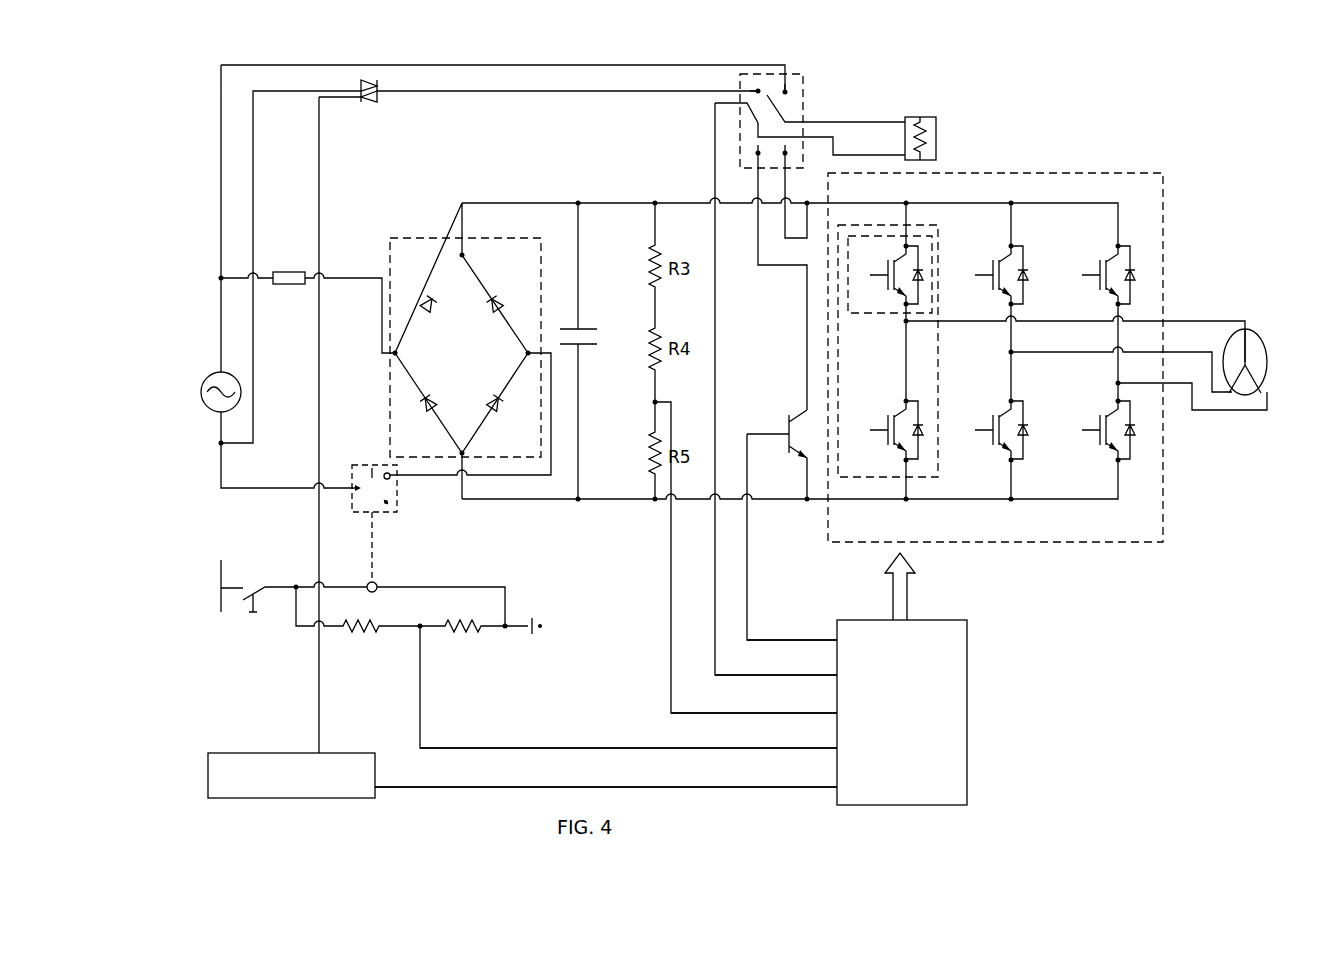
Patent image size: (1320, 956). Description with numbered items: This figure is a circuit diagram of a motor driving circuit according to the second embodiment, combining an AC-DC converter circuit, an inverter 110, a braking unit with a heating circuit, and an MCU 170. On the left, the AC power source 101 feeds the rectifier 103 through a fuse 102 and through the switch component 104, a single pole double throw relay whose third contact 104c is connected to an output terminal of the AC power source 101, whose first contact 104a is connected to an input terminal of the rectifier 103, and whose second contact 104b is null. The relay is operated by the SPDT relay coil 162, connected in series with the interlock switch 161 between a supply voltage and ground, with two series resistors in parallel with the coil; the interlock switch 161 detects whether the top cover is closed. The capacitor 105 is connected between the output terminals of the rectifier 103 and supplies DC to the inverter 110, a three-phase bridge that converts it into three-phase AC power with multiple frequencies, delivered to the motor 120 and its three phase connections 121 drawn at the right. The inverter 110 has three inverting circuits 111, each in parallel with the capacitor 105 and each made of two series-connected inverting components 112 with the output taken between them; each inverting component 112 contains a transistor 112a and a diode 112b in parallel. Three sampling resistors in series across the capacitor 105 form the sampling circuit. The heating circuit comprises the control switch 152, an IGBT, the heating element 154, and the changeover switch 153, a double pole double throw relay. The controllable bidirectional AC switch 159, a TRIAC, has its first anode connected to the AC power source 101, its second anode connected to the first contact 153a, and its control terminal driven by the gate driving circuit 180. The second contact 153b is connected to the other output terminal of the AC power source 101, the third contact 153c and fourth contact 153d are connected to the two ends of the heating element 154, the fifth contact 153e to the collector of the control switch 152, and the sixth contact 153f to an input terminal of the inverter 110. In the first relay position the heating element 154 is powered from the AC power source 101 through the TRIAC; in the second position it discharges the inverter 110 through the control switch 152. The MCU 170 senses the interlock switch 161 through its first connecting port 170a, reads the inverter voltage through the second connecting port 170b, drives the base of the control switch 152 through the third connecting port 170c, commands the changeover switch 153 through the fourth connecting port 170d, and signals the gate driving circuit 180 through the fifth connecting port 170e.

The AC power source 101 is at (207, 376).
The fuse 102 is at (292, 285).
The rectifier 103 is at (440, 236).
The switch component 104 is at (395, 467).
The first contact 104a is at (380, 474).
The second contact 104b is at (397, 507).
The third contact 104c is at (350, 487).
The capacitor 105 is at (573, 328).
The inverter 110 is at (1033, 357).
The inverting circuit 111 is at (928, 278).
The inverting component 112 is at (915, 327).
The transistor 112a is at (888, 286).
The diode 112b is at (921, 267).
The motor 120 is at (1249, 371).
The motor windings 121 is at (1230, 395).
The control switch 152 is at (789, 422).
The changeover switch 153 is at (771, 118).
The first contact 153a is at (758, 91).
The second contact 153b is at (785, 92).
The third contact 153c is at (758, 122).
The fourth contact 153d is at (785, 122).
The fifth contact 153e is at (758, 153).
The sixth contact 153f is at (785, 153).
The heating element 154 is at (916, 118).
The controllable bidirectional AC switch 159 is at (378, 97).
The interlock switch 161 is at (256, 606).
The SPDT relay coil 162 is at (378, 584).
The MCU 170 is at (728, 679).
The first connecting port 170a is at (628, 742).
The second connecting port 170b is at (754, 706).
The third connecting port 170c is at (792, 627).
The fourth connecting port 170d is at (776, 668).
The fifth connecting port 170e is at (606, 781).
The gate driving circuit 180 is at (375, 776).